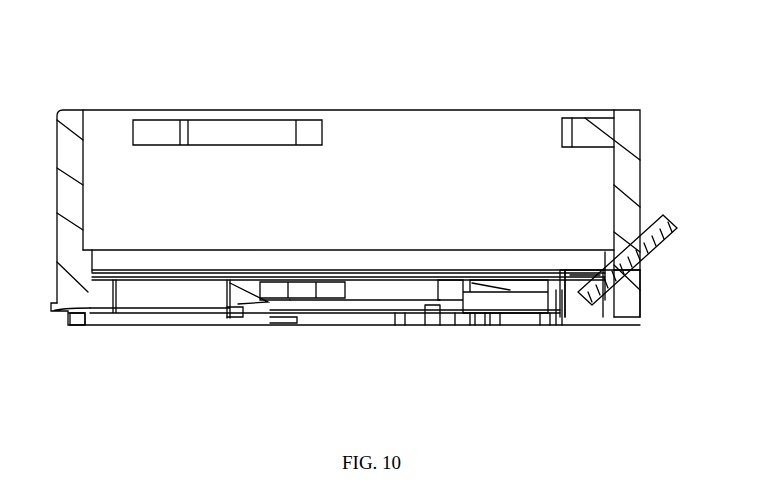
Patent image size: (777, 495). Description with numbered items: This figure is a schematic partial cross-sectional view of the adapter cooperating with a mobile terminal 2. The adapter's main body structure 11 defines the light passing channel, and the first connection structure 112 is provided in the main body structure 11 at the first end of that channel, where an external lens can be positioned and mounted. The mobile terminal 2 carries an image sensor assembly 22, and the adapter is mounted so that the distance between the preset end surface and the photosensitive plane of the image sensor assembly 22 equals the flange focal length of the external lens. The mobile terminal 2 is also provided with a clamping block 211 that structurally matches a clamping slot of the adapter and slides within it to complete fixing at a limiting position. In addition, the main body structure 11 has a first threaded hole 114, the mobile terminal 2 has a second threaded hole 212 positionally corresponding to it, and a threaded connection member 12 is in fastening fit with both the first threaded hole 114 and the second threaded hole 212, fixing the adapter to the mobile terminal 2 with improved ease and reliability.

The main body structure 11 is at (626, 170).
The first connection structure 112 is at (303, 133).
The threaded connection member 12 is at (667, 228).
The mobile terminal 2 is at (255, 300).
The image sensor assembly 22 is at (226, 281).
The clamping block 211 is at (86, 298).
The second threaded hole 212 is at (585, 290).
The first threaded hole 114 is at (637, 275).